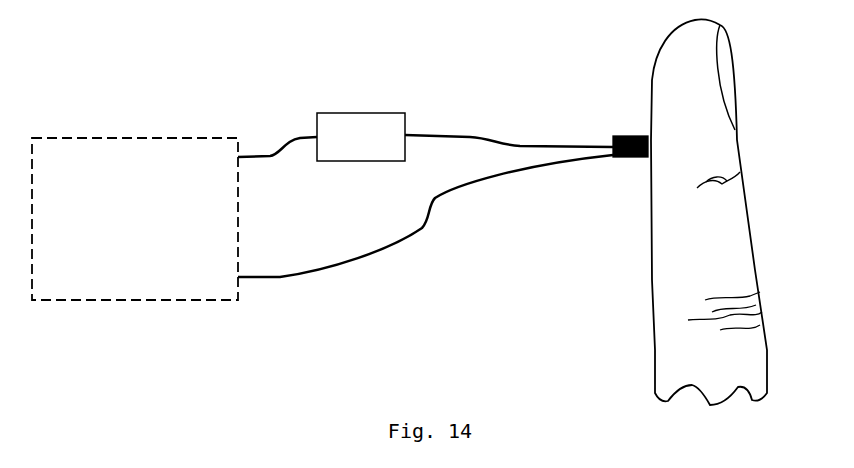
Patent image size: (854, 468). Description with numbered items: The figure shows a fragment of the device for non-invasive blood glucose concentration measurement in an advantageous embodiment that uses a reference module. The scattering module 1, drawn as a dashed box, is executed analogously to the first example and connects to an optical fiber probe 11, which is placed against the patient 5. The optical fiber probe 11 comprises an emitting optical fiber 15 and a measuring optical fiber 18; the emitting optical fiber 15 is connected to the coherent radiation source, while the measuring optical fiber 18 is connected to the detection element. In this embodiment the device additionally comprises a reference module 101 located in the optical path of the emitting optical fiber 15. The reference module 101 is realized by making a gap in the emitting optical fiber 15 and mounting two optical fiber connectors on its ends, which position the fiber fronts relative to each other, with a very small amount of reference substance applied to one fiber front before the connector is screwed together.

The scattering module 1 is at (132, 300).
The reference module 101 is at (365, 113).
The emitting optical fiber 15 is at (517, 140).
The measuring optical fiber 18 is at (462, 192).
The optical fiber probe 11 is at (622, 132).
The patient 5 is at (743, 200).